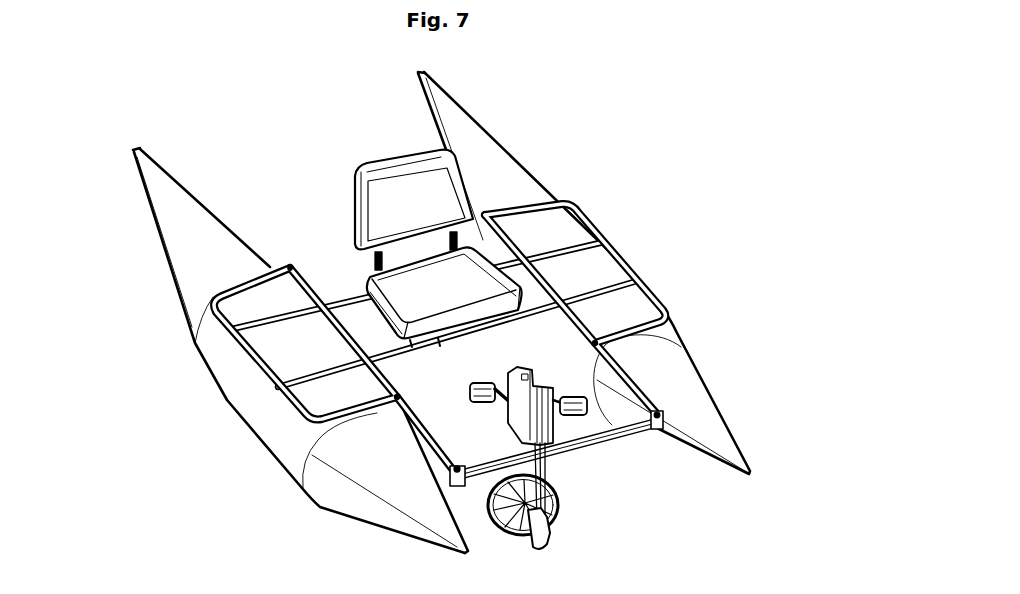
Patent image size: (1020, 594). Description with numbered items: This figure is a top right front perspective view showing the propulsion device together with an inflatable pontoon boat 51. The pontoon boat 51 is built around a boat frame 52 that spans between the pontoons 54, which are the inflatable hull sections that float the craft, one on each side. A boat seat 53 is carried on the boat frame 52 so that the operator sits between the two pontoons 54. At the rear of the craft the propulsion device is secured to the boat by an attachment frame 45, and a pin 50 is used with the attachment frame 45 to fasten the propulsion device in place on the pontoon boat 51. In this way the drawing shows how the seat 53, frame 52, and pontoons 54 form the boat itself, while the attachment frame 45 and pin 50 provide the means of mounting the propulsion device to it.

The attachment frame 45 is at (597, 447).
The pin 50 is at (392, 396).
The pontoon boat 51 is at (527, 163).
The boat frame 52 is at (597, 223).
The boat seat 53 is at (364, 276).
The pontoons 54 is at (692, 375).